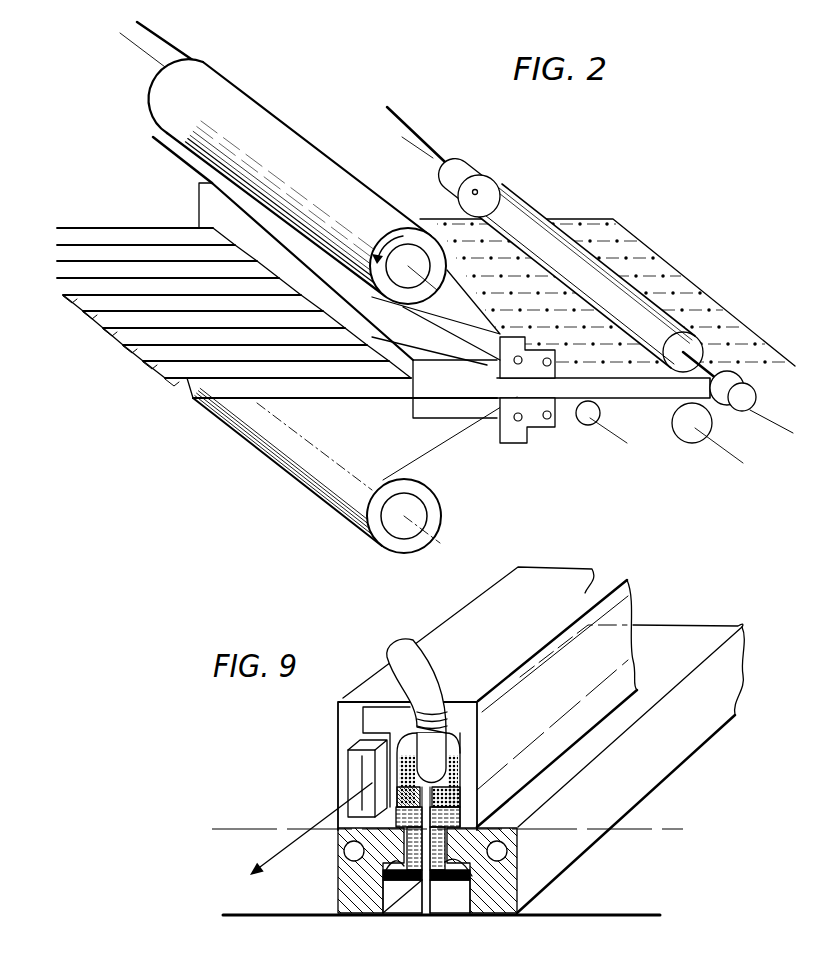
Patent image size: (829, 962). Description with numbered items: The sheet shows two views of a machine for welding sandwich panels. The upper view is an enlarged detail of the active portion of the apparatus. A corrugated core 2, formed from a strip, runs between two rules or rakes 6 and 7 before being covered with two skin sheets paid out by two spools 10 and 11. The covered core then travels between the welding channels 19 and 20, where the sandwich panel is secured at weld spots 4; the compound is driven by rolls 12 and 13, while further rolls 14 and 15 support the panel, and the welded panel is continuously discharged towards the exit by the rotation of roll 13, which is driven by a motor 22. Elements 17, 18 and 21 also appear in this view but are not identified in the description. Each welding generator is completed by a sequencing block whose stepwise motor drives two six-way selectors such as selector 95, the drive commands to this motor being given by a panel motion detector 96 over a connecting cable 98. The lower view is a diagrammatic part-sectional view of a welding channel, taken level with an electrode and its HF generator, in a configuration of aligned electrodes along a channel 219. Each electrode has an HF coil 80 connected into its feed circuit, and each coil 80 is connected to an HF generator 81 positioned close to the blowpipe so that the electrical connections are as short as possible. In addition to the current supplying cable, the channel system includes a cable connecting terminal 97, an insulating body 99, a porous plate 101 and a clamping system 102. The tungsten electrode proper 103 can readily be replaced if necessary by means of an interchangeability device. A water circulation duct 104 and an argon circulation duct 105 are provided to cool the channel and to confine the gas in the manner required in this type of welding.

In FIG. 2, the corrugated core 2 is at (200, 386).
In FIG. 2, the weld spots 4 is at (666, 293).
In FIG. 2, the rule or rake 6 is at (430, 406).
In FIG. 2, the rule or rake 7 is at (406, 381).
In FIG. 2, the spool 10 is at (412, 250).
In FIG. 2, the spool 11 is at (420, 503).
In FIG. 2, the roll 12 is at (697, 443).
In FIG. 2, the roll 13 is at (686, 336).
In FIG. 2, the roll 14 is at (745, 414).
In FIG. 2, the roll 15 is at (590, 428).
In FIG. 2, the shaft 17 is at (171, 40).
In FIG. 2, the shaft 18 is at (416, 128).
In FIG. 2, the welding channel 19 is at (500, 353).
In FIG. 2, the welding channel 20 is at (543, 441).
In FIG. 2, the shaft 21 is at (180, 157).
In FIG. 2, the motor 22 is at (467, 172).
In FIG. 2, the panel motion detector 96 is at (753, 391).
In FIG. 2, the connecting cable 98 is at (749, 415).
In FIG. 9, the channel 219 is at (592, 570).
In FIG. 9, the HF coil 80 is at (413, 723).
In FIG. 9, the HF generator 81 is at (362, 760).
In FIG. 9, the six-way selector 95 is at (301, 829).
In FIG. 9, the cable connecting terminal 97 is at (403, 770).
In FIG. 9, the insulating body 99 is at (510, 858).
In FIG. 9, the porous plate 101 is at (490, 880).
In FIG. 9, the clamping system 102 is at (362, 792).
In FIG. 9, the tungsten electrode 103 is at (426, 896).
In FIG. 9, the water circulation duct 104 is at (345, 851).
In FIG. 9, the argon circulation duct 105 is at (402, 862).